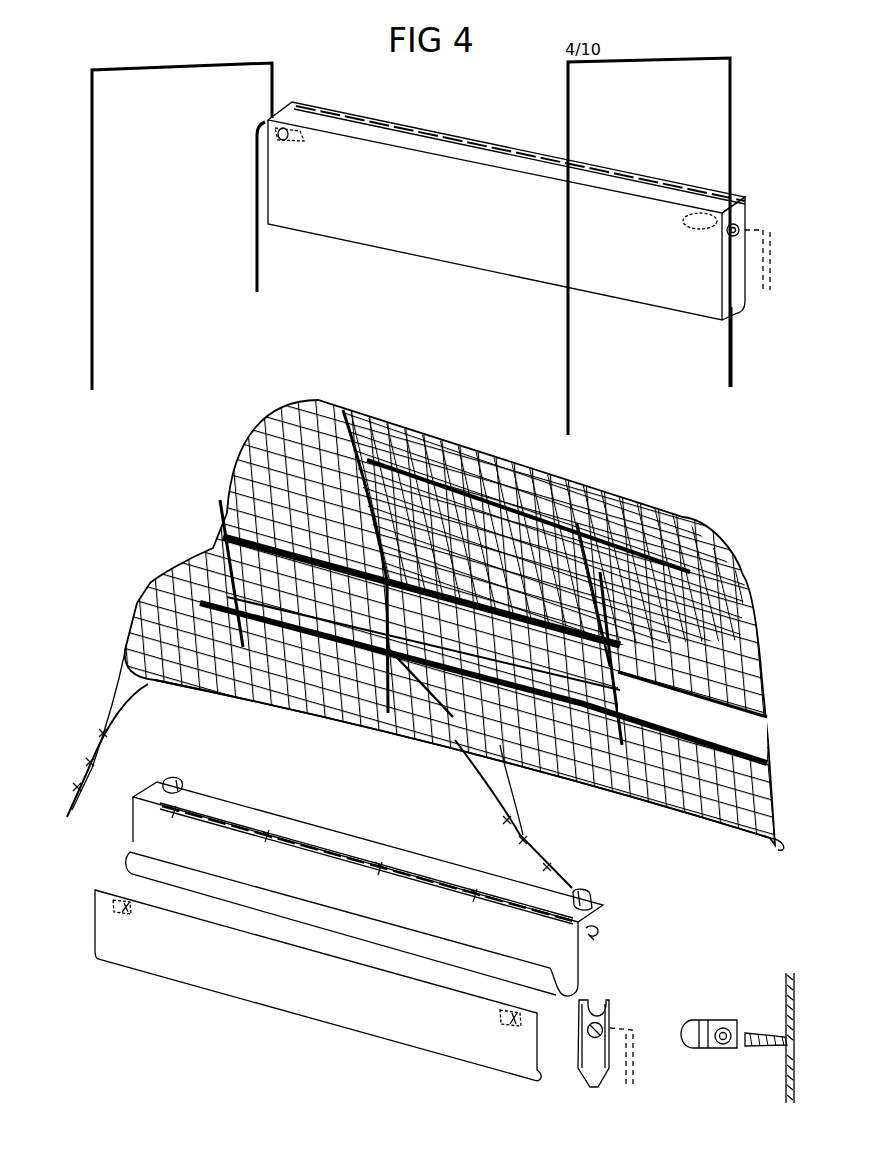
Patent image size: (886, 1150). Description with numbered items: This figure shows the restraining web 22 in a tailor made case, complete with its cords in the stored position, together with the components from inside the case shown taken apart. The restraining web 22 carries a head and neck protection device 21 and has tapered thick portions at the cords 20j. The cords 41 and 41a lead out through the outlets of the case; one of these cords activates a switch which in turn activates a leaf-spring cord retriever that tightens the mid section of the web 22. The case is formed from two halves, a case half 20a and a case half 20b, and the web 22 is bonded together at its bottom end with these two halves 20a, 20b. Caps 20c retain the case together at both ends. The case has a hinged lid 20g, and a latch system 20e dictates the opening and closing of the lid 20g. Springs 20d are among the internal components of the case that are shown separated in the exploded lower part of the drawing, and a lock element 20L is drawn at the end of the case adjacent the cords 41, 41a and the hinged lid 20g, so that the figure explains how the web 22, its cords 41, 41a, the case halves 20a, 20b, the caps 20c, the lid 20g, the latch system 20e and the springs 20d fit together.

The cord 41 is at (278, 90).
The cord 41a is at (258, 292).
The restraining web 22 is at (618, 487).
The head and neck protection device 21 is at (758, 738).
The tapered thick portions 20j is at (72, 788).
The case half 20a is at (157, 842).
The hinged lid 20g is at (437, 148).
The case half 20b is at (198, 970).
The cap 20c is at (577, 1085).
The lock screw 20L is at (743, 231).
The spring 20d is at (600, 930).
The latch system 20e is at (300, 147).